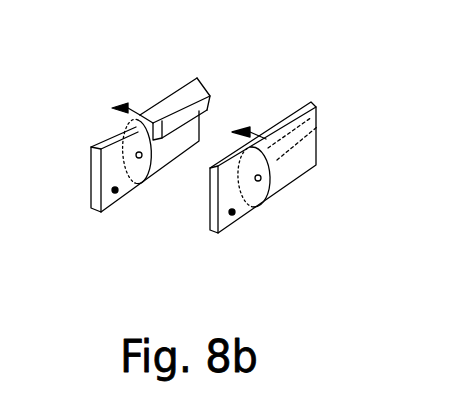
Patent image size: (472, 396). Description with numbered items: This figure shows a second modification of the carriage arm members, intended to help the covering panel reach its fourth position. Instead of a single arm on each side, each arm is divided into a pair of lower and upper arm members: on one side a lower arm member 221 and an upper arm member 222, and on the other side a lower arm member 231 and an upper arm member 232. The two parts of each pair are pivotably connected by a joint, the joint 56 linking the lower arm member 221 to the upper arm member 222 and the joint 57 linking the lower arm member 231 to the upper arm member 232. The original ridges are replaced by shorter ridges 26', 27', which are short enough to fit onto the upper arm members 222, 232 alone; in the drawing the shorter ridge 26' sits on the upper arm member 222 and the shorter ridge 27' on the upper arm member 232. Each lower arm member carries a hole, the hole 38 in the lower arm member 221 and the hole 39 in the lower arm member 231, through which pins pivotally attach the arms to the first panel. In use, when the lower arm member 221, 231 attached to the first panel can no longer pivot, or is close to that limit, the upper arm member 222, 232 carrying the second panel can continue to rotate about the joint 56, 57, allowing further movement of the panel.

The lower arm member 221 is at (114, 137).
The upper arm member 222 is at (169, 97).
The shorter ridge 26' is at (175, 87).
The joint 56 is at (141, 157).
The hole 38 is at (115, 190).
The lower arm member 231 is at (247, 203).
The upper arm member 232 is at (316, 166).
The shorter ridge 27' is at (279, 106).
The joint 57 is at (260, 181).
The hole 39 is at (232, 212).